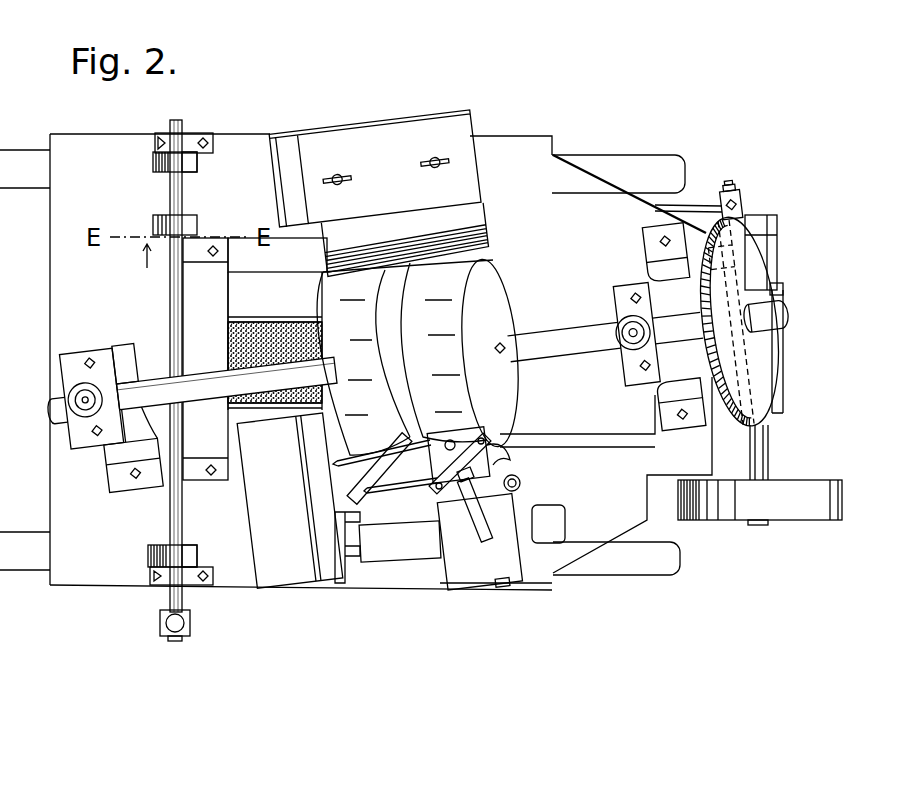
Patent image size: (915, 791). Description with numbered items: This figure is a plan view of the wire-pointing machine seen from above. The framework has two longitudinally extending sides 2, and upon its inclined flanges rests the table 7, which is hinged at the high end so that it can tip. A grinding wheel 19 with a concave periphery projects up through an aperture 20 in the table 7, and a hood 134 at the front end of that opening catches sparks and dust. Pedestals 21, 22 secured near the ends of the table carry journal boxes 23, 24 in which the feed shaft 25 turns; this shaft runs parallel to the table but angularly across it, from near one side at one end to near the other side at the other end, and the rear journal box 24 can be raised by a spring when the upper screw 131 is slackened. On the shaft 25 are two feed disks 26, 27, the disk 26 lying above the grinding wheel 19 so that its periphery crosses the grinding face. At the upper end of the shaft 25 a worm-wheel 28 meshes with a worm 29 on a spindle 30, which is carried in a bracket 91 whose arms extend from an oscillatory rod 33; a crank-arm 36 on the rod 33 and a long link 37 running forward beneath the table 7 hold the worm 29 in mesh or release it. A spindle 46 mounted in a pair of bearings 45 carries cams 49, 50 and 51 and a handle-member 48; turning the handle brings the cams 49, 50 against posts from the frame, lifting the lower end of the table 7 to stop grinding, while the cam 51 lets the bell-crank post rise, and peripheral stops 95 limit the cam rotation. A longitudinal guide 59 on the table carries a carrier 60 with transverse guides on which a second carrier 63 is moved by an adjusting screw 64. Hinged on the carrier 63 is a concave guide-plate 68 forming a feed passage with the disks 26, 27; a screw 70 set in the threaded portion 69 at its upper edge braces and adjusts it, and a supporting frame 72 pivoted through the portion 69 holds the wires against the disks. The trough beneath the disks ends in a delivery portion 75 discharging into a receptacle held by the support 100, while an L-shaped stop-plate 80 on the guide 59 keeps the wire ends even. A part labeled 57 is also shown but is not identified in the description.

The sides 2 is at (590, 158).
The table 7 is at (531, 137).
The grinding wheel 19 is at (283, 340).
The aperture 20 is at (262, 272).
The pedestal 21 is at (104, 456).
The pedestal 22 is at (645, 236).
The journal box 23 is at (136, 378).
The journal box 24 is at (668, 372).
The shaft 25 is at (818, 317).
The feed disk 26 is at (363, 362).
The feed disk 27 is at (424, 353).
The worm-wheel 28 is at (770, 365).
The worm 29 is at (783, 290).
The spindle 30 is at (766, 442).
The rod 33 is at (735, 192).
The crank-arm 36 is at (745, 203).
The link 37 is at (697, 205).
The bearings 45 is at (200, 133).
The spindle 46 is at (170, 197).
The handle-member 48 is at (185, 622).
The cam 49 is at (148, 552).
The cam 50 is at (153, 160).
The cam 51 is at (197, 223).
The drive roller 57 is at (820, 500).
The longitudinal guide 59 is at (388, 547).
The carrier 60 is at (552, 590).
The second carrier 63 is at (479, 542).
The adjusting screw 64 is at (494, 588).
The guide-plate 68 is at (515, 456).
The screw-threaded portion 69 is at (470, 436).
The adjusting screw 70 is at (473, 521).
The supporting frame 72 is at (330, 498).
The delivery portion 75 is at (405, 239).
The stop-plate 80 is at (286, 501).
The bracket 91 is at (778, 252).
The peripheral stops 95 is at (197, 160).
The support 100 is at (374, 169).
The upper screw 131 is at (620, 300).
The hood 134 is at (205, 359).